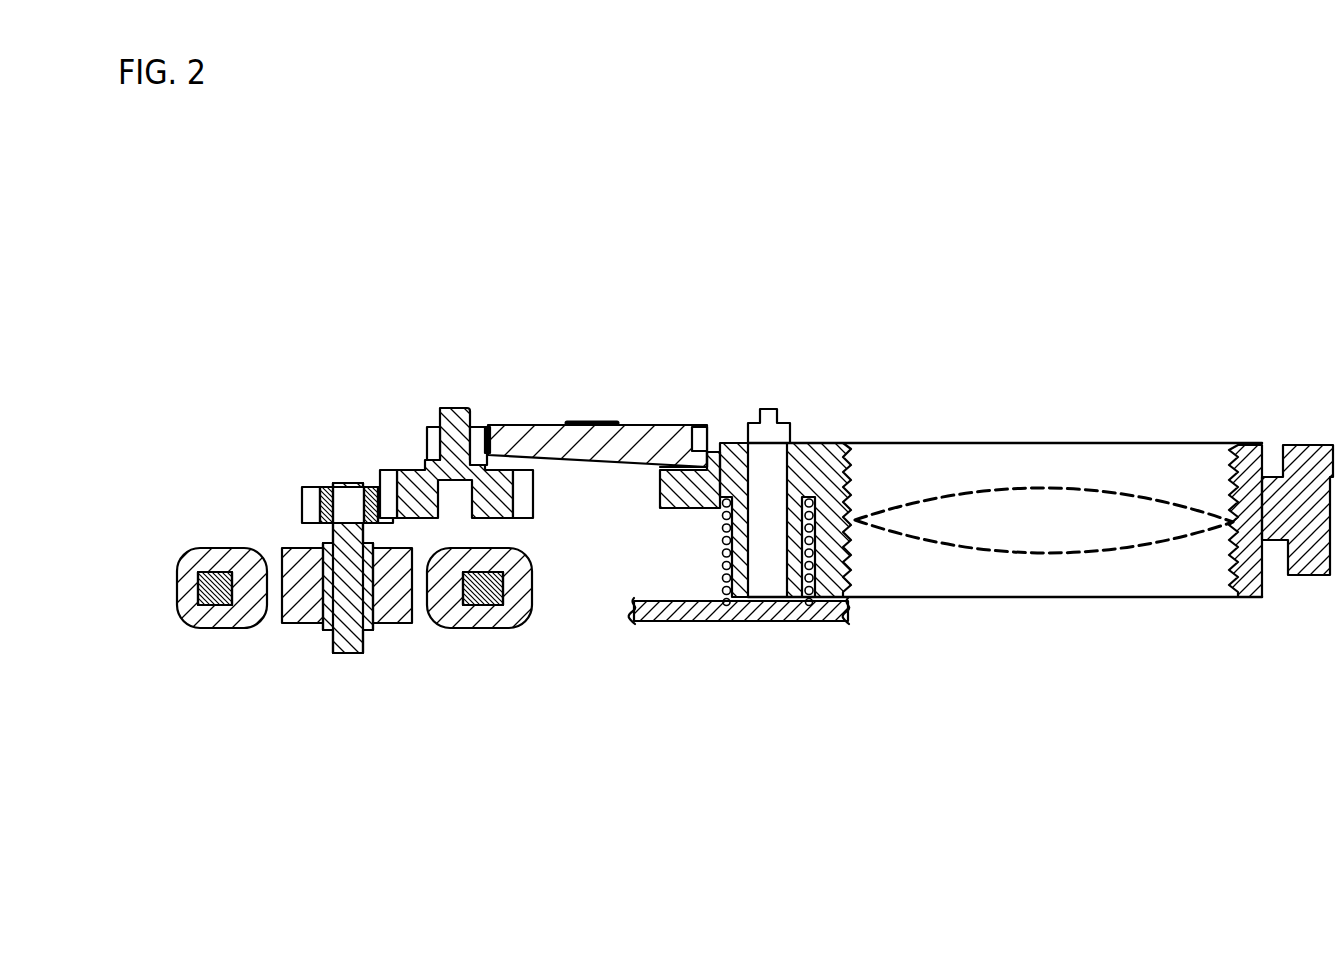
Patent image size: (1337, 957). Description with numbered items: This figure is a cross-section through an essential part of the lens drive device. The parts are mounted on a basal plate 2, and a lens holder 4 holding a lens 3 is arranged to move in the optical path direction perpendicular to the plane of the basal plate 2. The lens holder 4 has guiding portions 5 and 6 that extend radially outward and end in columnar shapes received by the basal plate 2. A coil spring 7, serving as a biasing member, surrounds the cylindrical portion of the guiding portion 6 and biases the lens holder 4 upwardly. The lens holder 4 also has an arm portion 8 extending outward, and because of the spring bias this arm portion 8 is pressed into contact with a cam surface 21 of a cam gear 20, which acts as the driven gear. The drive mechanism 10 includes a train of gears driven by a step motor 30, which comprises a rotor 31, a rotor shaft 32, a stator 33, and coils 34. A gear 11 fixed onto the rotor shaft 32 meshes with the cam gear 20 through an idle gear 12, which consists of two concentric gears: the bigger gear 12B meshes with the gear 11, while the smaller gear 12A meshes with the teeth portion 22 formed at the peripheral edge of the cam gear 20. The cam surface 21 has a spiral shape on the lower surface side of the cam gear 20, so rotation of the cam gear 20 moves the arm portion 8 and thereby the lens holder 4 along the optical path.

The basal plate 2 is at (670, 600).
The lens 3 is at (1117, 540).
The lens holder 4 is at (1032, 445).
The guiding portion 5 is at (1298, 445).
The guiding portion 6 is at (789, 428).
The coil spring 7 is at (726, 585).
The arm portion 8 is at (672, 508).
The drive mechanism 10 is at (524, 349).
The gear 11 is at (310, 486).
The idle gear 12 is at (417, 470).
The gear 12A is at (432, 425).
The gear 12B is at (383, 470).
The cam gear 20 is at (650, 425).
The cam surface 21 is at (632, 467).
The teeth portion 22 is at (705, 425).
The step motor 30 is at (252, 636).
The rotor 31 is at (308, 618).
The rotor shaft 32 is at (330, 535).
The stator 33 is at (182, 600).
The coils 34 is at (460, 630).